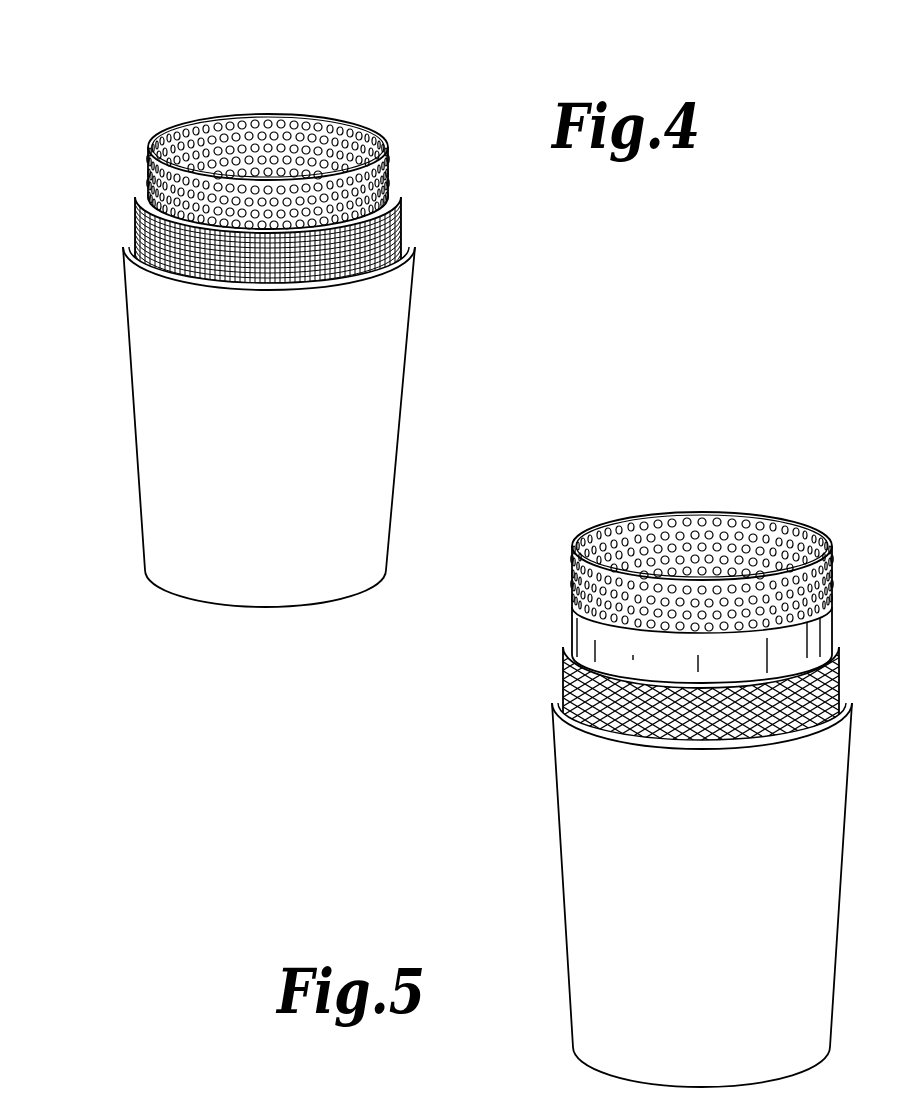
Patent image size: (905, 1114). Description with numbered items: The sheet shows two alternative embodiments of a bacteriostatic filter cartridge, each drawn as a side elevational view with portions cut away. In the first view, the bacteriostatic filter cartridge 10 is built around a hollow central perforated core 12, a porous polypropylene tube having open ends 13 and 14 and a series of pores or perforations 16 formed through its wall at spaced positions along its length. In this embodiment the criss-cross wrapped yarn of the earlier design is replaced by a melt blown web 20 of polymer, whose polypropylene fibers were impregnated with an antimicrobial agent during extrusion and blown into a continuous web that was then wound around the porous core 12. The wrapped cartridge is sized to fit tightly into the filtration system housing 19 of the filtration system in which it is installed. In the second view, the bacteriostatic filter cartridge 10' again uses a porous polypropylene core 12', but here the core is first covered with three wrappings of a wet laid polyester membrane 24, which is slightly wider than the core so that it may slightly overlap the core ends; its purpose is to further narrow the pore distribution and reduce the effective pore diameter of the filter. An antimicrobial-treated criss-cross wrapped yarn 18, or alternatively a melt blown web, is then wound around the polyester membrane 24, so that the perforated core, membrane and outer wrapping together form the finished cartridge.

In FIG. 4, the bacteriostatic filter cartridge 10 is at (225, 428).
In FIG. 4, the hollow central perforated core 12 is at (269, 147).
In FIG. 4, the open end 13 is at (310, 114).
In FIG. 4, the open end 14 is at (288, 608).
In FIG. 4, the pores or perforations 16 is at (222, 125).
In FIG. 4, the filtration system housing 19 is at (123, 247).
In FIG. 5, the filtration system housing 19 is at (555, 714).
In FIG. 4, the melt blown web 20 is at (133, 217).
In FIG. 5, the bacteriostatic filter cartridge 10' is at (651, 881).
In FIG. 5, the porous polypropylene core 12' is at (667, 597).
In FIG. 5, the criss-cross wrapped yarn 18 is at (560, 682).
In FIG. 5, the wet laid polyester membrane 24 is at (572, 637).